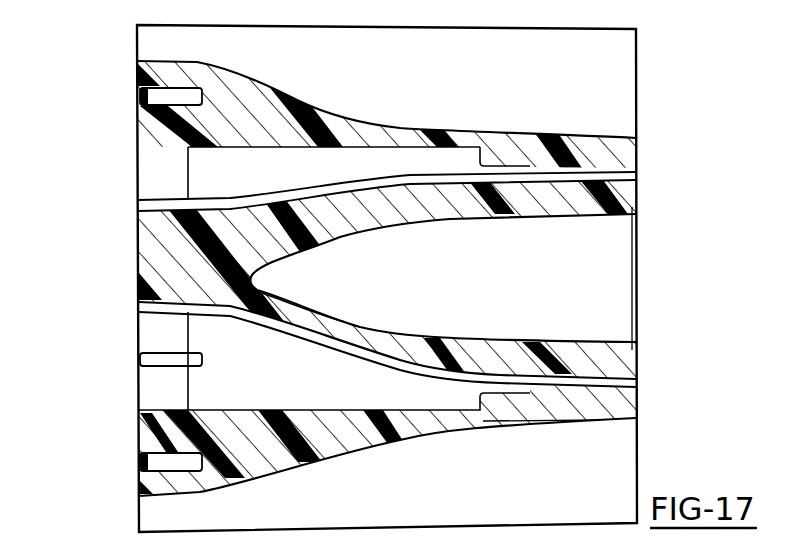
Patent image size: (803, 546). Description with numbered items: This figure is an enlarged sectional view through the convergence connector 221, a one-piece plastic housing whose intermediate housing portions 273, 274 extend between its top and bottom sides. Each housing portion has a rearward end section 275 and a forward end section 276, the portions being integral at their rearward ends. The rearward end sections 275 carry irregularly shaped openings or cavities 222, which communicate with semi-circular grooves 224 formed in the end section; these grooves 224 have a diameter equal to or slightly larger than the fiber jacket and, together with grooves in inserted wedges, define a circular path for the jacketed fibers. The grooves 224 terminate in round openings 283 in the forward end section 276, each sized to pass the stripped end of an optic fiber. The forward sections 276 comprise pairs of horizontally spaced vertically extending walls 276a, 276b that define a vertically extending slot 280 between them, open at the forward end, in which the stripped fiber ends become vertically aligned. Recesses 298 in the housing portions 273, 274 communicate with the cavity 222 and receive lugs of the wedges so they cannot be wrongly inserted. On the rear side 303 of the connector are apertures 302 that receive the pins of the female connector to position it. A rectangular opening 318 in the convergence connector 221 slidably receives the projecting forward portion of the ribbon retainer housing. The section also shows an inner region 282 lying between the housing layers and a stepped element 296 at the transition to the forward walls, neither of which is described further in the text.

The convergence connector 221 is at (138, 26).
The rearward end section 275 is at (225, 87).
The apertures 302 is at (140, 98).
The intermediate housing portion 273 is at (162, 123).
The openings 222 is at (153, 170).
The semi-circular grooves 224 is at (212, 207).
The recesses 298 is at (153, 360).
The intermediate housing portion 274 is at (162, 412).
The rear side 303 is at (139, 514).
The insulating insert 282 is at (405, 178).
The notch block 296 is at (483, 165).
The round openings 283 is at (530, 168).
The vertically extending wall 276a is at (587, 147).
The forward end section 276 is at (637, 148).
The slot 280 is at (620, 171).
The vertically extending wall 276b is at (580, 199).
The rectangular opening 318 is at (555, 225).